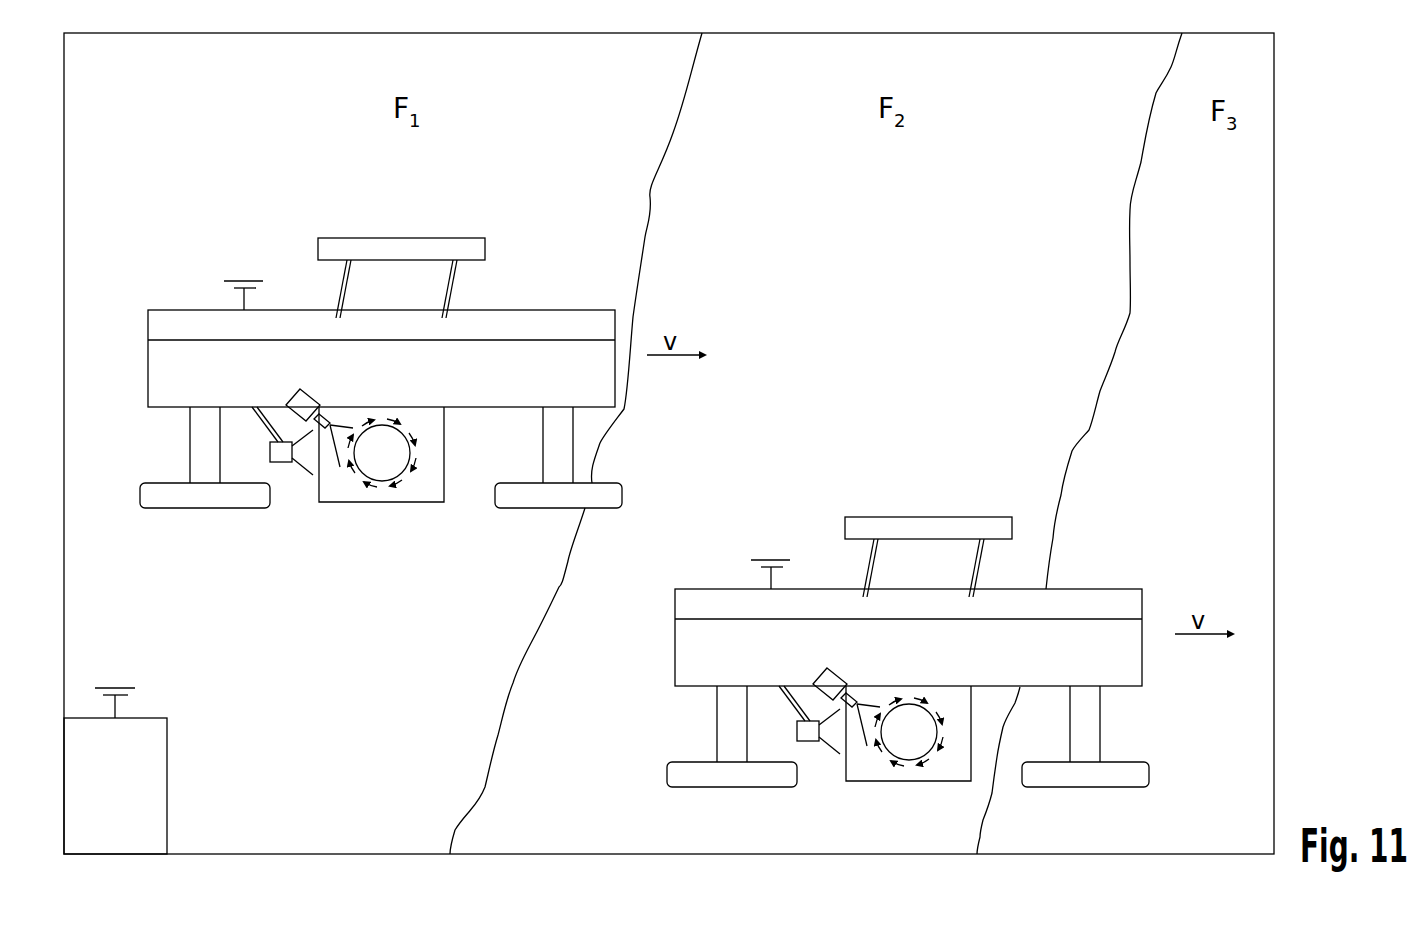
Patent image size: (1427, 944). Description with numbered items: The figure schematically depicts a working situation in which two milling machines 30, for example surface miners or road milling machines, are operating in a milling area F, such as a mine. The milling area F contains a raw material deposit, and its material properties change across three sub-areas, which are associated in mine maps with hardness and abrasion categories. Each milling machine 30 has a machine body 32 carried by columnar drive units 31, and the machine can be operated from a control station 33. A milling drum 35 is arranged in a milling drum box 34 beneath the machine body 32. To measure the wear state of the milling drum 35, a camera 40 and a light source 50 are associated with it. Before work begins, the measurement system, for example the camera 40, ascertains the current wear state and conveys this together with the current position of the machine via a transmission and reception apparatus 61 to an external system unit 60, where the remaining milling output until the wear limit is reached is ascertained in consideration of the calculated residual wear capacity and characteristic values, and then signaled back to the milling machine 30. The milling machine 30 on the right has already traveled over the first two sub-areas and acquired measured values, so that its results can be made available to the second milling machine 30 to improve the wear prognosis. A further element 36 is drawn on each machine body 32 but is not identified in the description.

The milling area F is at (1275, 390).
The milling machine 30 is at (580, 290).
The columnar drive units 31 is at (560, 448).
The machine body 32 is at (600, 383).
The control station 33 is at (402, 252).
The milling drum box 34 is at (430, 440).
The milling drum 35 is at (413, 477).
The antenna / communication unit 36 is at (242, 303).
The camera 40 is at (328, 385).
The light source 50 is at (286, 485).
The external system unit 60 is at (157, 757).
The transmission and reception apparatus 61 is at (118, 708).